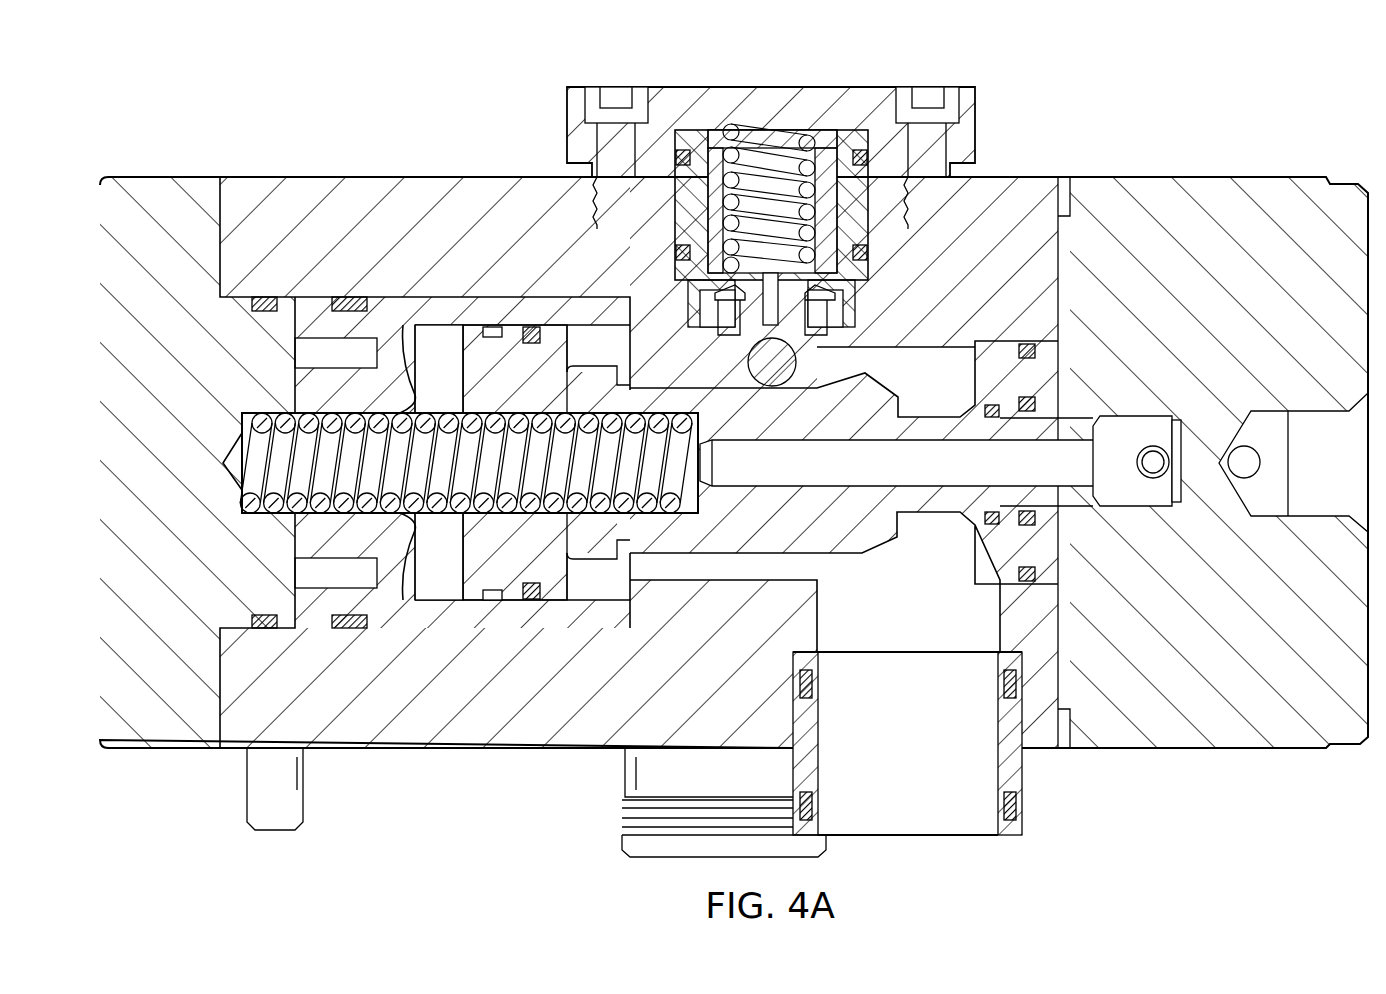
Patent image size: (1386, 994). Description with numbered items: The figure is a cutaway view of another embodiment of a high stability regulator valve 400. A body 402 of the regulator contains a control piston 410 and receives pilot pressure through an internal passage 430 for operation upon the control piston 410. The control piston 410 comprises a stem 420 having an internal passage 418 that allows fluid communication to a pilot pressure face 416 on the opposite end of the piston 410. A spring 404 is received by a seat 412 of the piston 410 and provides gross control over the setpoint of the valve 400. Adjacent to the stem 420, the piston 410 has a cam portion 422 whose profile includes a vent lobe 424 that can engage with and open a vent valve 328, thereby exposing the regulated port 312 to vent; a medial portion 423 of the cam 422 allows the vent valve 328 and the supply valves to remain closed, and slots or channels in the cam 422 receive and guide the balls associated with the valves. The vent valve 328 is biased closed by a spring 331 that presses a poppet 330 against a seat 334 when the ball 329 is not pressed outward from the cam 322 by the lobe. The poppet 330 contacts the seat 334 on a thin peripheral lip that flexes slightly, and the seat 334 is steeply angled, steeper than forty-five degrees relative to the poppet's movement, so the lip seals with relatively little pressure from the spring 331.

The valve 400 is at (395, 85).
The body 402 is at (372, 188).
The spring 404 is at (240, 470).
The control piston 410 is at (742, 565).
The seat 412 is at (565, 517).
The pilot pressure face 416 is at (457, 590).
The internal passage 418 is at (1070, 458).
The stem 420 is at (1086, 504).
The cam portion 422 is at (827, 527).
The medial portion 423 is at (684, 582).
The vent lobe 424 is at (848, 375).
The internal passage 430 is at (1150, 480).
The regulated port 312 is at (895, 836).
The cam 322 is at (690, 264).
The vent valve 328 is at (760, 209).
The ball 329 is at (746, 368).
The poppet 330 is at (858, 238).
The spring 331 is at (780, 135).
The seat 334 is at (848, 306).